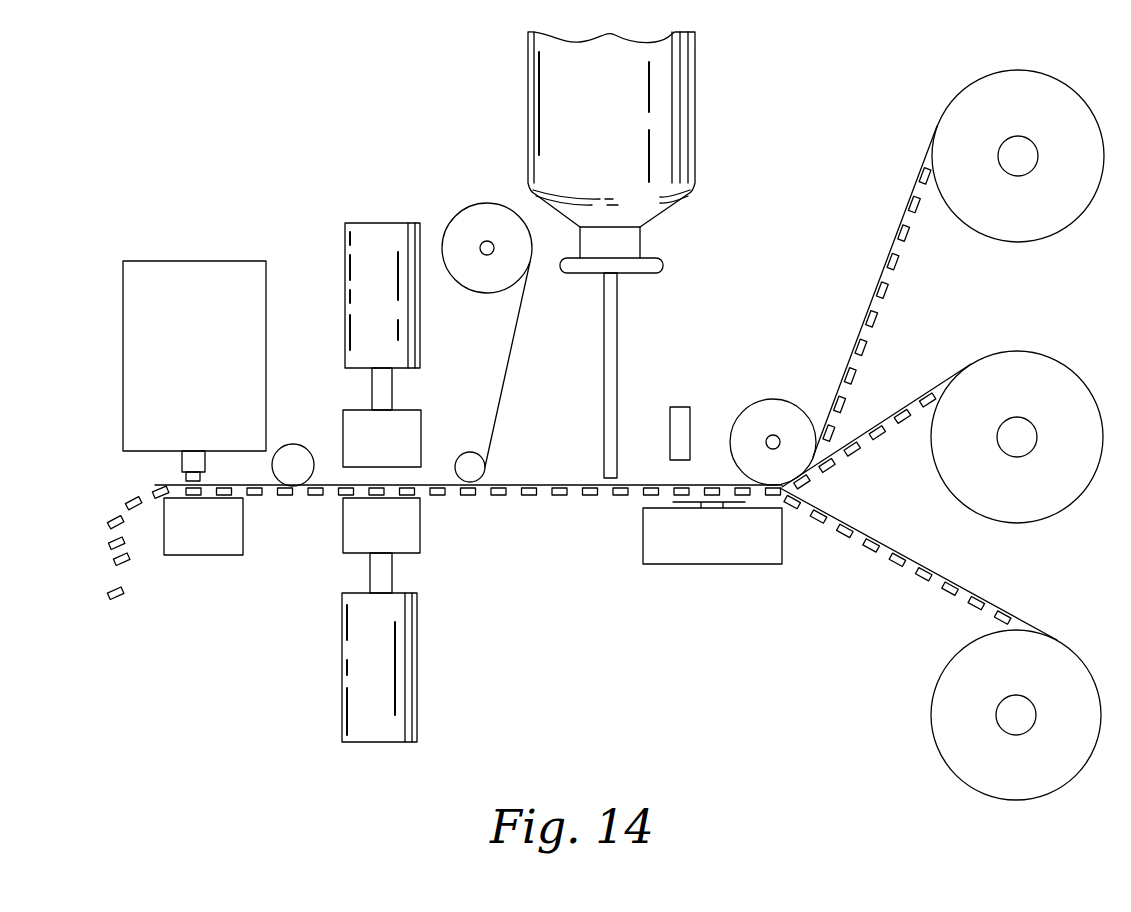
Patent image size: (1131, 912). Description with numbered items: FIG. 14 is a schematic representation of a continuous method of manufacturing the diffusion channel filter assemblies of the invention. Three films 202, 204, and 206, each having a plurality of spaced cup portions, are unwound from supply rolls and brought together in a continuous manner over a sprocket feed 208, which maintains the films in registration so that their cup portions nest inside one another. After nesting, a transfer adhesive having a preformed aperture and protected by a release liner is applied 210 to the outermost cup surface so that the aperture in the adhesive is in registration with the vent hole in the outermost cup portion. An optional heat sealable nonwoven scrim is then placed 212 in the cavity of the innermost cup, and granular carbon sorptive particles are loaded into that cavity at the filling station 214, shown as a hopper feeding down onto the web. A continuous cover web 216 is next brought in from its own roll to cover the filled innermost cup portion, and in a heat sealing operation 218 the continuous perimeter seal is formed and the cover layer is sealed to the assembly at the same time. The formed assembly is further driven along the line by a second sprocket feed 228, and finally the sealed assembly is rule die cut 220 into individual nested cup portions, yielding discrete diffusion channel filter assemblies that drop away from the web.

The film 202 is at (913, 558).
The film 204 is at (910, 405).
The film 206 is at (875, 296).
The sprocket feed 208 is at (755, 400).
The transfer adhesive application 210 is at (708, 565).
The scrim placement 212 is at (680, 405).
The filling station 214 is at (604, 393).
The continuous cover web 216 is at (507, 362).
The heat sealing operation 218 is at (421, 425).
The rule die cut 220 is at (122, 402).
The sprocket feed 228 is at (292, 444).